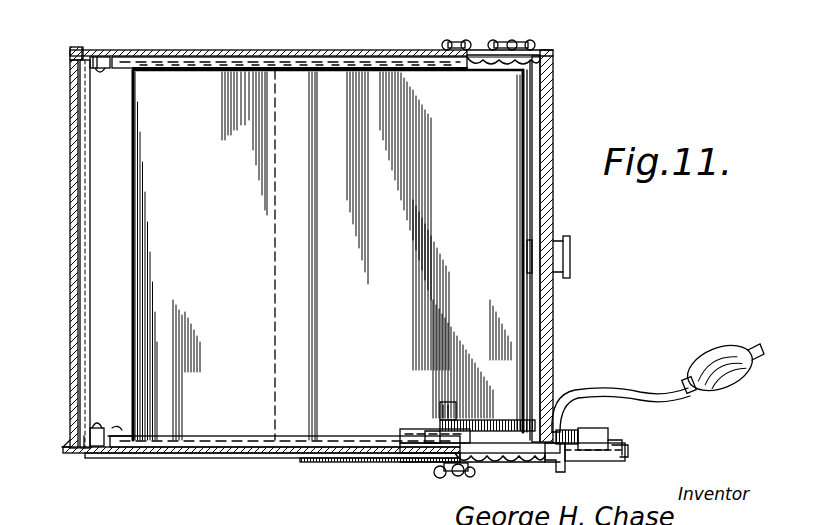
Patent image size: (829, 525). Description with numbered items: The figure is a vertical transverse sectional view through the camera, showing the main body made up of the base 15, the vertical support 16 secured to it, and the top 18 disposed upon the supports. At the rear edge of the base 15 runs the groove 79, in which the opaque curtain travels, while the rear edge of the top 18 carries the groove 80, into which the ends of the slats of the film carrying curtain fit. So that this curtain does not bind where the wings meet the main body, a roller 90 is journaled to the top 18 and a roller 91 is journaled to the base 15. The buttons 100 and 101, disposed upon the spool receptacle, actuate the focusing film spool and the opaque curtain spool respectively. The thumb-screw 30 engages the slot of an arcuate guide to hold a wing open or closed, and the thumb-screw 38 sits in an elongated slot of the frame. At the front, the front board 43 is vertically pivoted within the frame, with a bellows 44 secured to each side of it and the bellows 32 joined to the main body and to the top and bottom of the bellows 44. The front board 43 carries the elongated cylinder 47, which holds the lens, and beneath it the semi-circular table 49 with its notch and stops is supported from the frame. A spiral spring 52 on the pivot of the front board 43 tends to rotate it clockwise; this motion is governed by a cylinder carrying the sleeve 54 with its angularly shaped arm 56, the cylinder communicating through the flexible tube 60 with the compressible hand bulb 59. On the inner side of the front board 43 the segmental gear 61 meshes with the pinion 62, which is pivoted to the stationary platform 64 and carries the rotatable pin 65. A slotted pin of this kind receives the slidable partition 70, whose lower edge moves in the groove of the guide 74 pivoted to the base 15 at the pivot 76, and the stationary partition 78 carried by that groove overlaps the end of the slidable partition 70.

The base 15 is at (272, 455).
The vertical support 16 is at (356, 462).
The top 18 is at (222, 47).
The thumb-screw 30 is at (432, 472).
The bellows 32 is at (511, 56).
The thumb-screw 38 is at (450, 41).
The front board 43 is at (556, 101).
The bellows 44 is at (538, 188).
The elongated cylinder 47 is at (570, 256).
The semi-circular table 49 is at (601, 461).
The spiral spring 52 is at (553, 466).
The sleeve 54 is at (608, 428).
The angularly shaped arm 56 is at (630, 444).
The compressible hand bulb 59 is at (712, 360).
The flexible tube 60 is at (627, 394).
The segmental gear 61 is at (500, 426).
The pinion 62 is at (438, 425).
The stationary platform 64 is at (462, 438).
The rotatable pin 65 is at (443, 402).
The slidable partition 70 is at (433, 251).
The guide 74 is at (207, 77).
The pivot 76 is at (118, 438).
The stationary partition 78 is at (226, 256).
The groove 79 is at (72, 50).
The groove 80 is at (84, 46).
The roller 90 is at (104, 70).
The roller 91 is at (102, 427).
The button 100 is at (500, 41).
The button 101 is at (548, 50).